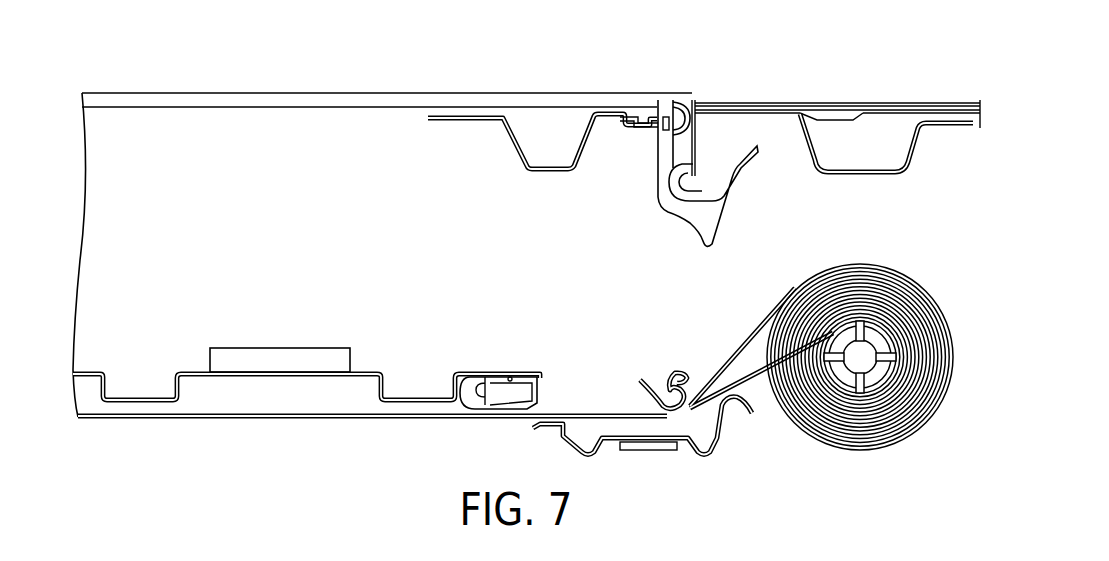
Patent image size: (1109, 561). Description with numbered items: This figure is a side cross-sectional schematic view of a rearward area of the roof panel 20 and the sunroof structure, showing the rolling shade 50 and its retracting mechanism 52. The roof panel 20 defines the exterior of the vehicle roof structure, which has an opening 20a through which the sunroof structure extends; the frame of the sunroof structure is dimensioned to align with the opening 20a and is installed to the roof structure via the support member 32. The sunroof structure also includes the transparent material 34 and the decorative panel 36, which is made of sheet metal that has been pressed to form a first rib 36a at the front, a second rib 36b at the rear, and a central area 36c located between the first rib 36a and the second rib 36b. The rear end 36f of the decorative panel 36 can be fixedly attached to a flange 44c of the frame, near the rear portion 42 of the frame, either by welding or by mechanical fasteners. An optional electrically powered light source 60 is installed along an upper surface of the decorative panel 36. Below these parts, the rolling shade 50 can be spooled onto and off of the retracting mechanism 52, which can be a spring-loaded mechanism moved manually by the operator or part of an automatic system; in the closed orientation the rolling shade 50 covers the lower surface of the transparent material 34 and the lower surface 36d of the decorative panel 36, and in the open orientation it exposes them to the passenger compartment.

The roof panel 20 is at (833, 102).
The opening 20a is at (692, 191).
The support member 32 is at (545, 173).
The transparent material 34 is at (333, 92).
The decorative panel 36 is at (465, 362).
The first rib 36a is at (137, 402).
The second rib 36b is at (420, 402).
The central area 36c is at (287, 377).
The lower surface 36d is at (362, 378).
The rear end 36f is at (530, 370).
The rear portion 42 is at (650, 453).
The flange 44c is at (540, 390).
The rolling shade 50 is at (303, 420).
The retracting mechanism 52 is at (848, 367).
The electrically powered light source 60 is at (257, 348).